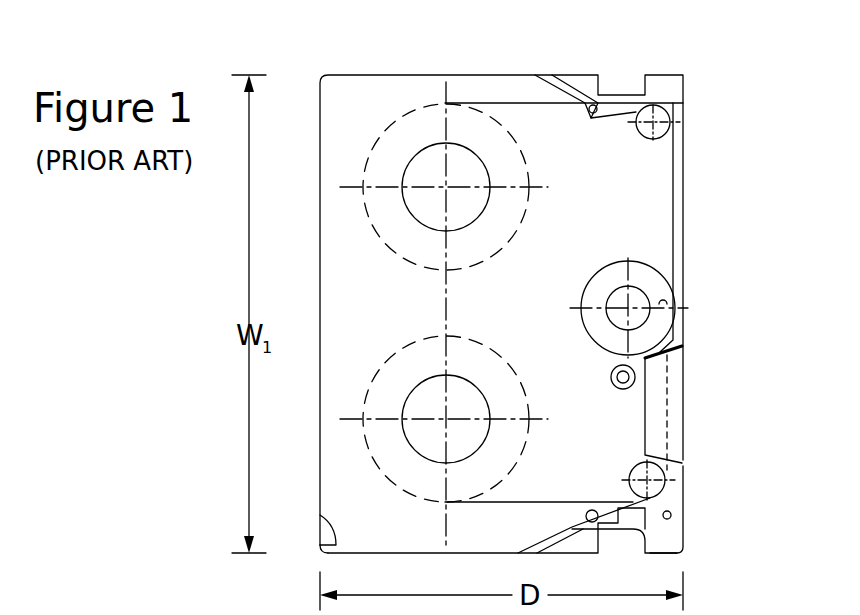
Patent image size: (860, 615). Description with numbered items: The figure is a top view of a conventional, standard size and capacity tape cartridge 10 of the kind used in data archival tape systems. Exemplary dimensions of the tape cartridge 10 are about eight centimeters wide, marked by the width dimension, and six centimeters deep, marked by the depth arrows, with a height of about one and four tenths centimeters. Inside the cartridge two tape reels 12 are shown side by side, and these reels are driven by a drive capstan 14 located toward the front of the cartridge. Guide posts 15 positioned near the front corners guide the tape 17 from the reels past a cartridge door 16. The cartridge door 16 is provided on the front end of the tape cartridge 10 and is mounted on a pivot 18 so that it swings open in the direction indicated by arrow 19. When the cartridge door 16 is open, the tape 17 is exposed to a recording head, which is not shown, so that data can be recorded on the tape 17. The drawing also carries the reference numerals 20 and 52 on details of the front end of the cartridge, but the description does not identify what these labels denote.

The tape cartridge 10 is at (492, 68).
The tape reels 12 is at (420, 212).
The drive capstan 14 is at (650, 265).
The guide posts 15 is at (670, 113).
The cartridge door 16 is at (680, 368).
The tape 17 is at (673, 185).
The pivot 18 is at (671, 515).
The arrow 19 is at (760, 438).
The mounting face 20 is at (683, 553).
The port 52 is at (620, 466).